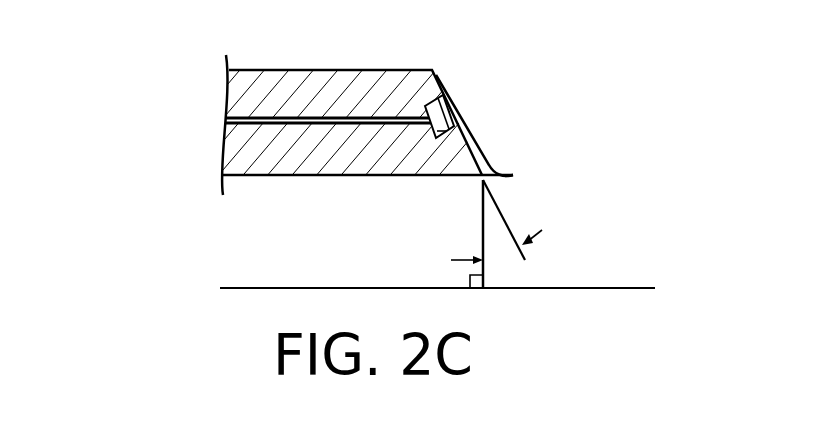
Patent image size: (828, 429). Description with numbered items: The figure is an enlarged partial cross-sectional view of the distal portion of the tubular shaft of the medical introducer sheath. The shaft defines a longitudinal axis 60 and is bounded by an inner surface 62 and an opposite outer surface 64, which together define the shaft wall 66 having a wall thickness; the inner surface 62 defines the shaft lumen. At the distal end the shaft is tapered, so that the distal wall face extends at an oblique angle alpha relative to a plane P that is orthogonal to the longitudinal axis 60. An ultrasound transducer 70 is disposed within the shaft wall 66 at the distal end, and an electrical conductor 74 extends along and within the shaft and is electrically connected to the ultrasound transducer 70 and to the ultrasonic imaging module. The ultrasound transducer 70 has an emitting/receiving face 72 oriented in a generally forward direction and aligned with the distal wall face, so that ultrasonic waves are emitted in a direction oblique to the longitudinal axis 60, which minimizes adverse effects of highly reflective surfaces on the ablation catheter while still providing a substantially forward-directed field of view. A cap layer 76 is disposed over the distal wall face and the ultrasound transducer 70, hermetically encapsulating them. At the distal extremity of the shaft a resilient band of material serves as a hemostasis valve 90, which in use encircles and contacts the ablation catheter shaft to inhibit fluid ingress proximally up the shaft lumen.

The longitudinal axis 60 is at (588, 288).
The inner surface 62 is at (312, 175).
The outer surface 64 is at (383, 69).
The shaft wall 66 is at (287, 73).
The ultrasound transducer 70 is at (438, 140).
The emitting/receiving face 72 is at (452, 110).
The electrical conductor 74 is at (223, 121).
The cap layer 76 is at (477, 141).
The hemostasis valve 90 is at (508, 178).
The plane P is at (481, 238).